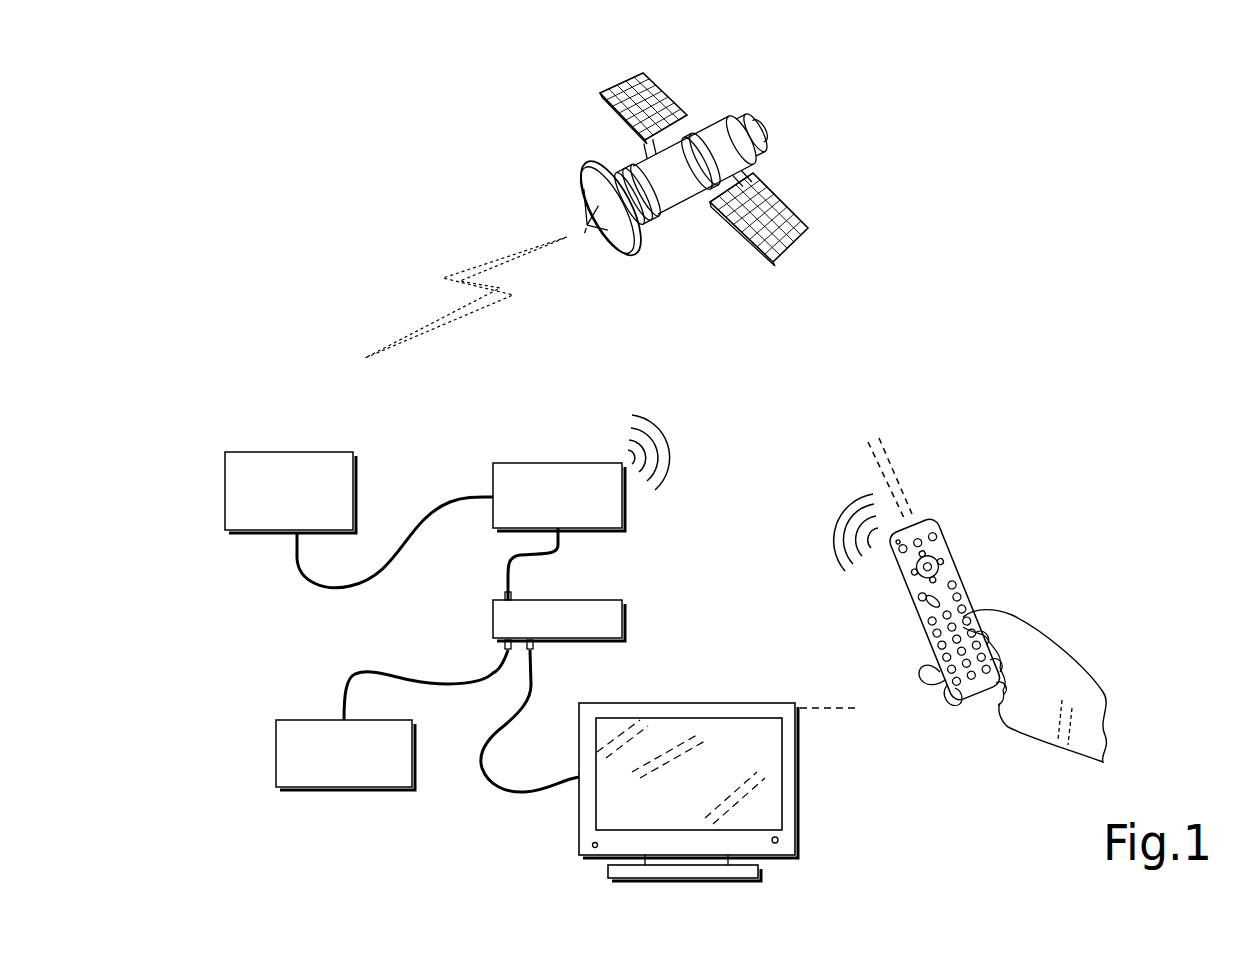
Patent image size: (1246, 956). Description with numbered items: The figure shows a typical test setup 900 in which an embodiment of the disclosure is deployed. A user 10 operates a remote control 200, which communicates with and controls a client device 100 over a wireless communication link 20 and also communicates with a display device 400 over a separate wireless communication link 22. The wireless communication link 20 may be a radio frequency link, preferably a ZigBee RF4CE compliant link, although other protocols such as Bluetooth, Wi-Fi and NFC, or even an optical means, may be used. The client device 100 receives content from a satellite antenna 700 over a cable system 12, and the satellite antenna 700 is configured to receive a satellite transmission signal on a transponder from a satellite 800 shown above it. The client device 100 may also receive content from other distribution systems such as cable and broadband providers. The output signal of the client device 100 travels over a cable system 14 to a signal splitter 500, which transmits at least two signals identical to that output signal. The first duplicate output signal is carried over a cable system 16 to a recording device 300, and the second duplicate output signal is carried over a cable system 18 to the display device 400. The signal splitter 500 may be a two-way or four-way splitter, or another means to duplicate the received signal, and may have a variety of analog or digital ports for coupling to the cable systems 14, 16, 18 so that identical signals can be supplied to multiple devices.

The test setup 900 is at (346, 214).
The satellite 800 is at (645, 240).
The satellite antenna 700 is at (260, 452).
The cable system 12 is at (367, 588).
The client device 100 is at (622, 505).
The wireless communication link 20 is at (632, 415).
The cable system 14 is at (562, 545).
The signal splitter 500 is at (622, 612).
The cable system 16 is at (342, 684).
The recording device 300 is at (276, 757).
The cable system 18 is at (483, 742).
The display device 400 is at (683, 703).
The wireless communication link 22 is at (845, 700).
The remote control 200 is at (945, 528).
The user 10 is at (1027, 628).